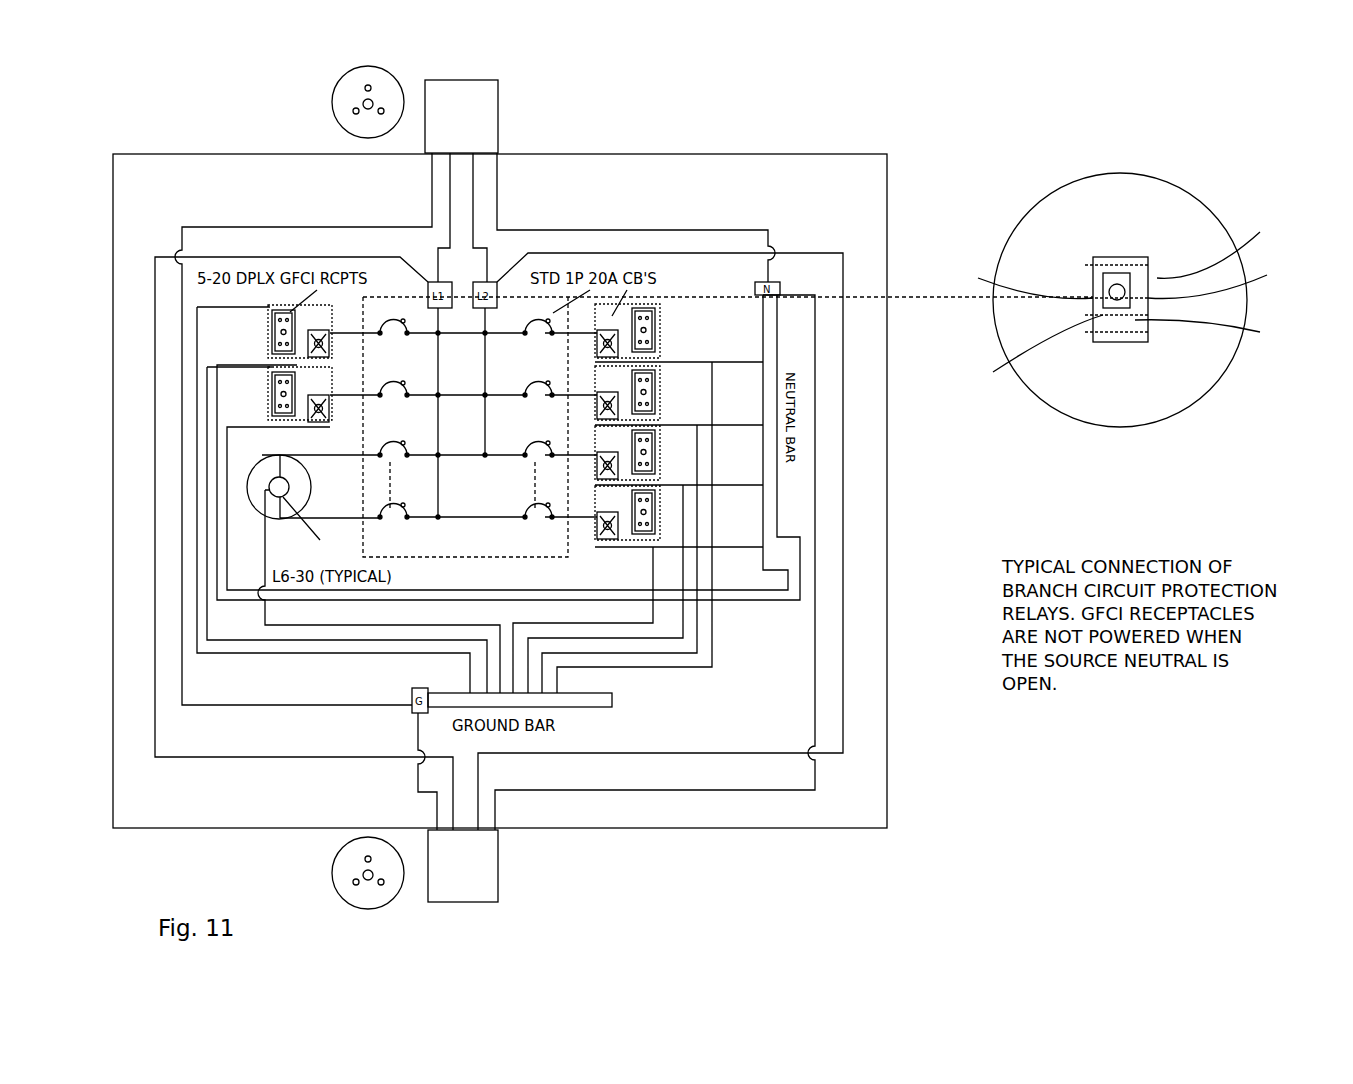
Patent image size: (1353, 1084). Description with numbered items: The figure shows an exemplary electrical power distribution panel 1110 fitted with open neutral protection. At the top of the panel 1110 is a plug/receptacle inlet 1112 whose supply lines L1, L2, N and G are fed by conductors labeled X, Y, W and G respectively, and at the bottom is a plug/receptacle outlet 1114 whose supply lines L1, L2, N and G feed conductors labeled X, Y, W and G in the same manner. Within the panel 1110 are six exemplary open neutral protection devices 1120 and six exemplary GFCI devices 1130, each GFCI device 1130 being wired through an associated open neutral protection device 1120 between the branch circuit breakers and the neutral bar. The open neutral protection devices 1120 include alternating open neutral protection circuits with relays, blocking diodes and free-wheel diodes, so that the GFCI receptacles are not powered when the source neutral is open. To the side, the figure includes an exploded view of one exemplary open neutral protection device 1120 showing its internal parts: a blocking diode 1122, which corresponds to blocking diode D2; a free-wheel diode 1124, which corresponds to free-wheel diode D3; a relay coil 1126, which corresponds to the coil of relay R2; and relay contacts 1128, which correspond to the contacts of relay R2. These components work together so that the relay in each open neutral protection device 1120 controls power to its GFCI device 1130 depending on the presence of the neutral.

The electrical power distribution panel 1110 is at (242, 153).
The plug/receptacle inlet 1112 is at (498, 128).
The plug/receptacle outlet 1114 is at (498, 888).
The open neutral protection device 1120 is at (1039, 184).
The blocking diode 1122 is at (1029, 355).
The free-wheel diode 1124 is at (1011, 281).
The relay coil 1126 is at (1234, 279).
The relay contacts 1128 is at (1221, 277).
The GFCI device 1130 is at (270, 318).